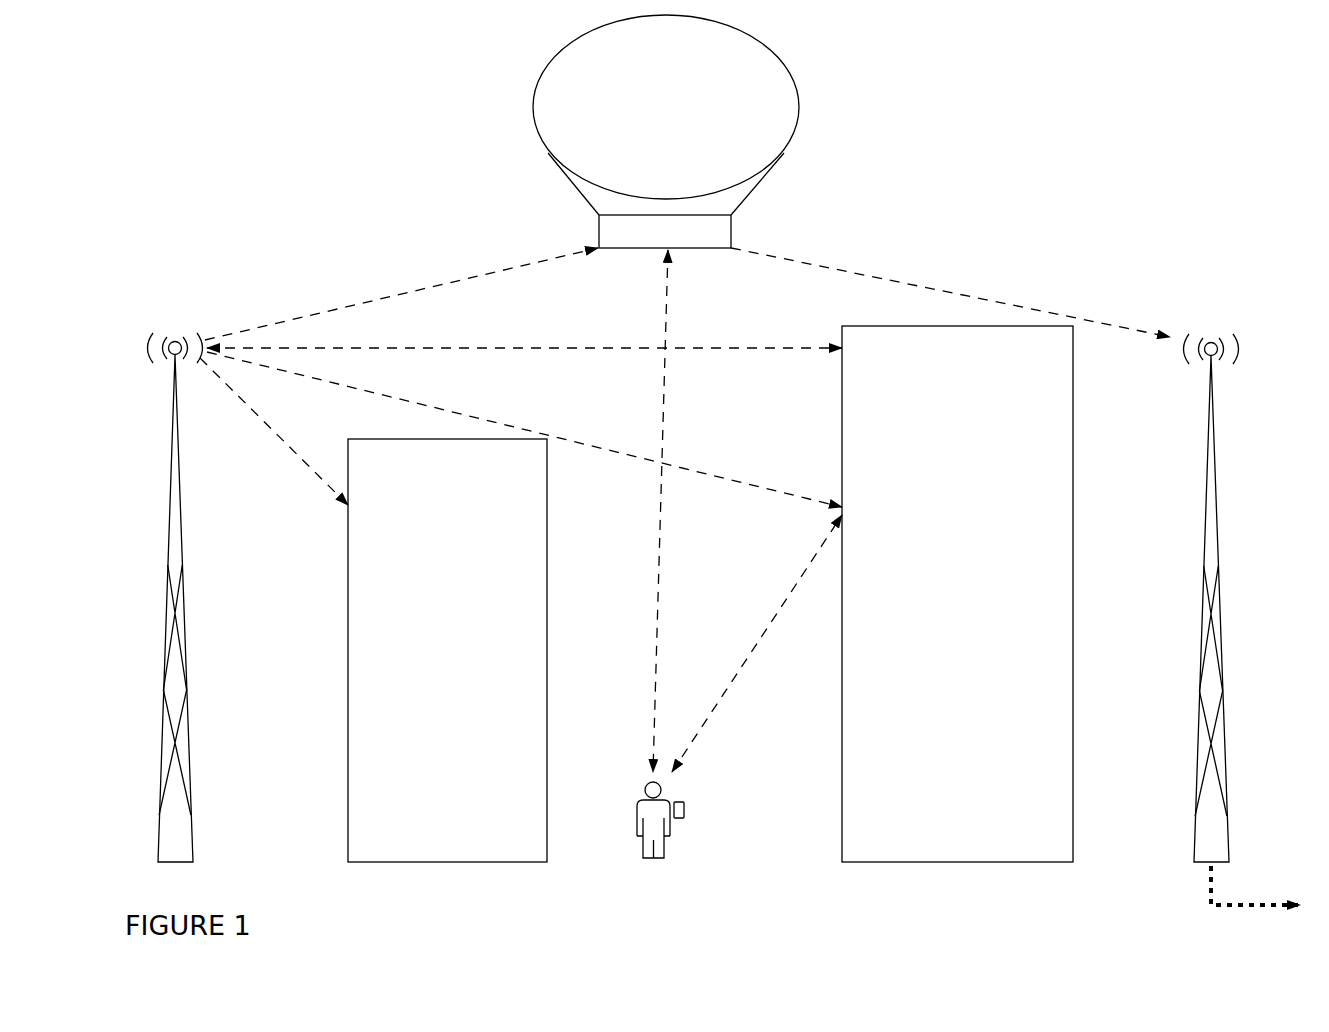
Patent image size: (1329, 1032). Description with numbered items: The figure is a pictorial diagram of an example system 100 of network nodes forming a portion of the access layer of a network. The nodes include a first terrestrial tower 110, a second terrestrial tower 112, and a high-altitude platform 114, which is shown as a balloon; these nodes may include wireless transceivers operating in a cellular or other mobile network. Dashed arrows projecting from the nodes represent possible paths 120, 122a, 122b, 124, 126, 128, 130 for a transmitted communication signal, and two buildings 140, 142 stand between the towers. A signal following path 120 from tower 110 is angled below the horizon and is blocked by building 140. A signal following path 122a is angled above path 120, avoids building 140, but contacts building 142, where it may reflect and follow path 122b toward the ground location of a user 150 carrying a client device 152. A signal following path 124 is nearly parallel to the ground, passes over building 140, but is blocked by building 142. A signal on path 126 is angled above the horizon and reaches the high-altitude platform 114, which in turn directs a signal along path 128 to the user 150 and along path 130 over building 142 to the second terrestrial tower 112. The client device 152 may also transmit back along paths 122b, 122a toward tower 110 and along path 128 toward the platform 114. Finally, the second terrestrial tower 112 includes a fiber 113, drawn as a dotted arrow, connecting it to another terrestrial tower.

The system 100 is at (185, 891).
The first terrestrial tower 110 is at (175, 567).
The second terrestrial tower 112 is at (1211, 567).
The fiber 113 is at (1255, 902).
The high-altitude platform 114 is at (666, 131).
The path 120 is at (274, 431).
The path 122a is at (524, 429).
The path 122b is at (757, 643).
The path 124 is at (524, 332).
The path 126 is at (401, 294).
The path 128 is at (642, 511).
The path 130 is at (950, 292).
The building 140 is at (447, 650).
The building 142 is at (957, 594).
The user 150 is at (668, 839).
The client device 152 is at (702, 813).